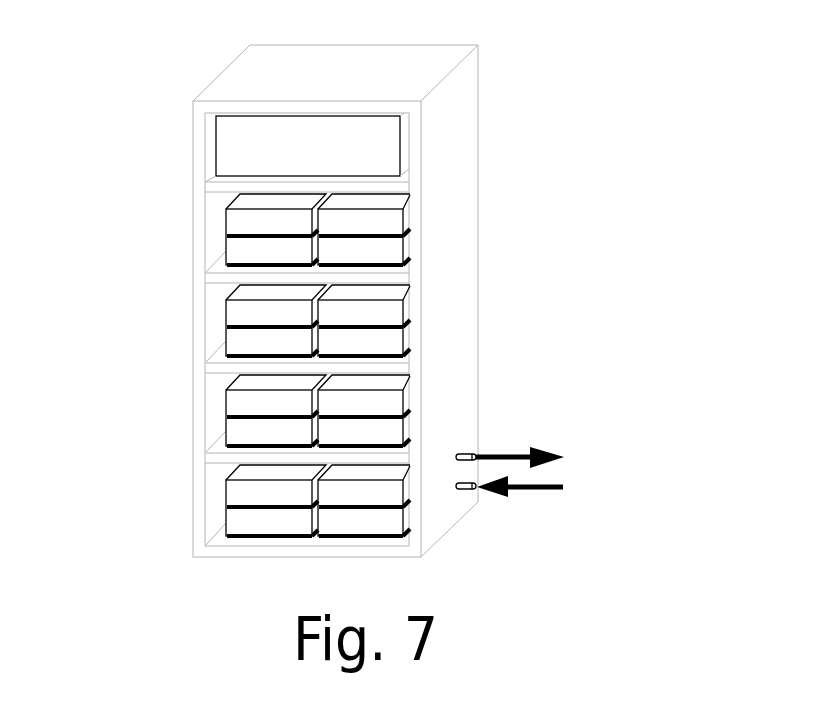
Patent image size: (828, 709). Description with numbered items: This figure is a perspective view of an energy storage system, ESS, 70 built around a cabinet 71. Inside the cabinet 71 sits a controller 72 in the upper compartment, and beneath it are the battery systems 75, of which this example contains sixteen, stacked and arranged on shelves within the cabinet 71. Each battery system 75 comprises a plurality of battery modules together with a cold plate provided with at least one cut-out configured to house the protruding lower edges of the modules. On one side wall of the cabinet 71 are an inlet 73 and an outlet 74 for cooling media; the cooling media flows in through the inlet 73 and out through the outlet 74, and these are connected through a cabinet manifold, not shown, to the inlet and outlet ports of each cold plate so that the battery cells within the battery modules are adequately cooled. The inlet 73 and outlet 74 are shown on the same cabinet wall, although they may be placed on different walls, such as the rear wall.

The energy storage system 70 is at (187, 49).
The cabinet 71 is at (193, 119).
The controller 72 is at (378, 146).
The inlet 73 is at (468, 492).
The outlet 74 is at (468, 452).
The battery system 75 is at (212, 228).